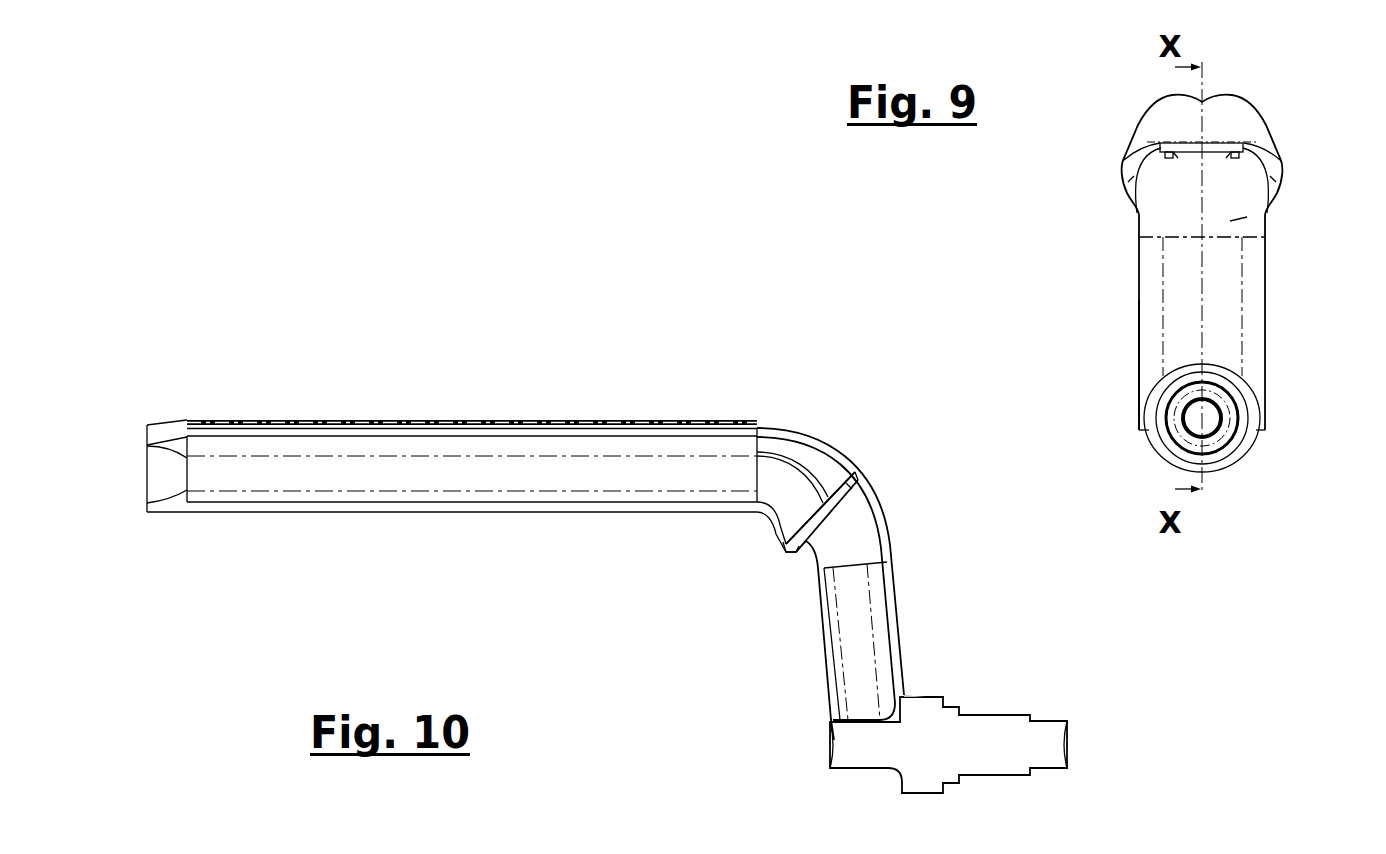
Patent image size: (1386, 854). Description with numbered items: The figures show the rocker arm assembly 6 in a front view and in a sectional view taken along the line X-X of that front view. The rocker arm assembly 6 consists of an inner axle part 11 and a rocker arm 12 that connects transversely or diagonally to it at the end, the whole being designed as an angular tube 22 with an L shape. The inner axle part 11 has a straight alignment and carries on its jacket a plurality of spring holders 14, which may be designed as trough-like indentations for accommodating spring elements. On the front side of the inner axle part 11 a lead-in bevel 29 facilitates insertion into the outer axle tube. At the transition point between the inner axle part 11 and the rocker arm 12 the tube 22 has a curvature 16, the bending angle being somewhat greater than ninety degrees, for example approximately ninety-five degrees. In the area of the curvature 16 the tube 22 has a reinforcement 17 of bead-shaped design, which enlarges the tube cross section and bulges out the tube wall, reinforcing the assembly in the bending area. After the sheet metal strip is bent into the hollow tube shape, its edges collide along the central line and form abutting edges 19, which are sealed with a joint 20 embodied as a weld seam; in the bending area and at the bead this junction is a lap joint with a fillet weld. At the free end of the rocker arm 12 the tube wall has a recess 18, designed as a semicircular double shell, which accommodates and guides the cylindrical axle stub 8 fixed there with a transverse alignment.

In FIG. 9, the rocker arm assembly 6 is at (1195, 287).
In FIG. 10, the rocker arm assembly 6 is at (607, 538).
In FIG. 9, the axle stub 8 is at (1209, 422).
In FIG. 10, the axle stub 8 is at (976, 738).
In FIG. 9, the inner axle part 11 is at (1247, 103).
In FIG. 10, the inner axle part 11 is at (250, 420).
In FIG. 9, the rocker arm 12 is at (1150, 290).
In FIG. 10, the rocker arm 12 is at (835, 680).
In FIG. 10, the spring holder 14 is at (402, 447).
In FIG. 10, the curvature 16 is at (833, 435).
In FIG. 9, the reinforcement 17 is at (1140, 138).
In FIG. 10, the reinforcement 17 is at (788, 543).
In FIG. 10, the recess 18 is at (866, 720).
In FIG. 10, the abutting edges 19 is at (827, 507).
In FIG. 10, the joint 20 is at (820, 508).
In FIG. 9, the tube 22 is at (1138, 353).
In FIG. 10, the tube 22 is at (546, 513).
In FIG. 10, the lead-in bevel 29 is at (158, 458).